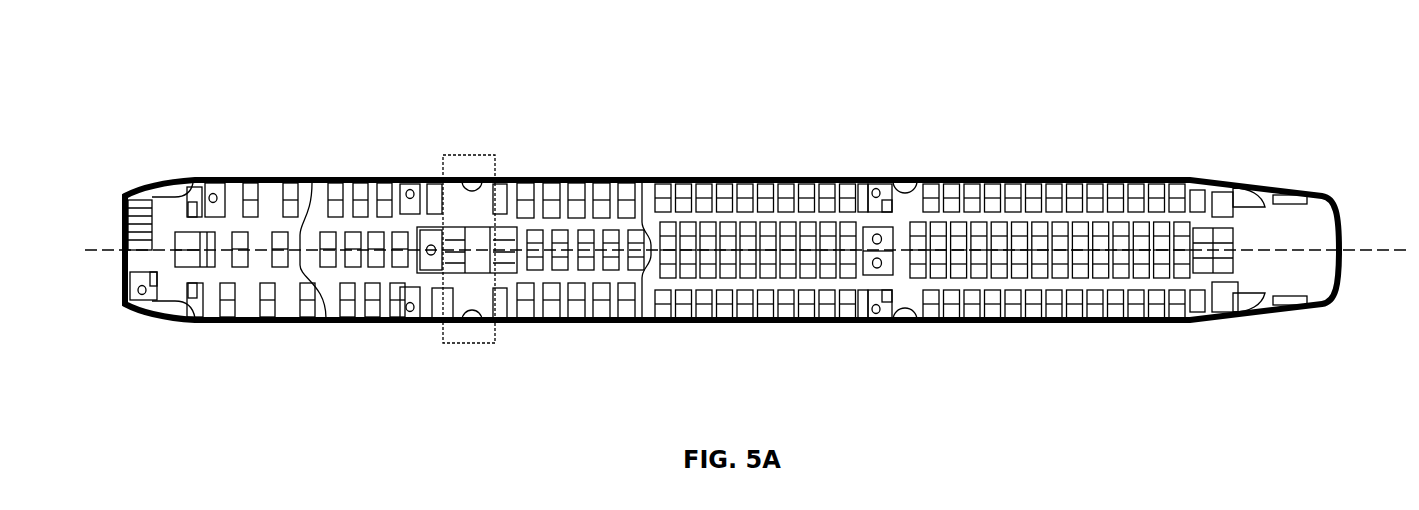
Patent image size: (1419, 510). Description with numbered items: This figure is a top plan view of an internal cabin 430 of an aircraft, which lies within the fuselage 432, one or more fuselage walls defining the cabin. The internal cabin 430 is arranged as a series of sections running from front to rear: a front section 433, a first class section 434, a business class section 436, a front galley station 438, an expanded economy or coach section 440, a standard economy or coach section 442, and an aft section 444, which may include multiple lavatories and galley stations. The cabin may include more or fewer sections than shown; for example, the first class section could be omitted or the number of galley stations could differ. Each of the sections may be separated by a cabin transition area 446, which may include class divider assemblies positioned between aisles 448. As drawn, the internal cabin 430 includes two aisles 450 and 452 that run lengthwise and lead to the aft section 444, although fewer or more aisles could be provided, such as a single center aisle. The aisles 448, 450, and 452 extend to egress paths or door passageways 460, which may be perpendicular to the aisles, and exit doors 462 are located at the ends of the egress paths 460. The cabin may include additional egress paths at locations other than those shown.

The internal cabin 430 is at (258, 80).
The fuselage 432 is at (594, 100).
The front section 433 is at (178, 340).
The first class section 434 is at (283, 322).
The business class section 436 is at (345, 182).
The front galley station 438 is at (457, 338).
The expanded economy or coach section 440 is at (570, 322).
The standard economy or coach section 442 is at (700, 182).
The aft section 444 is at (1263, 207).
The cabin transition area 446 is at (186, 182).
The aisles 448 is at (418, 182).
The aisle 450 is at (1058, 218).
The aisle 452 is at (1075, 287).
The egress paths 460 is at (560, 182).
The exit doors 462 is at (480, 178).